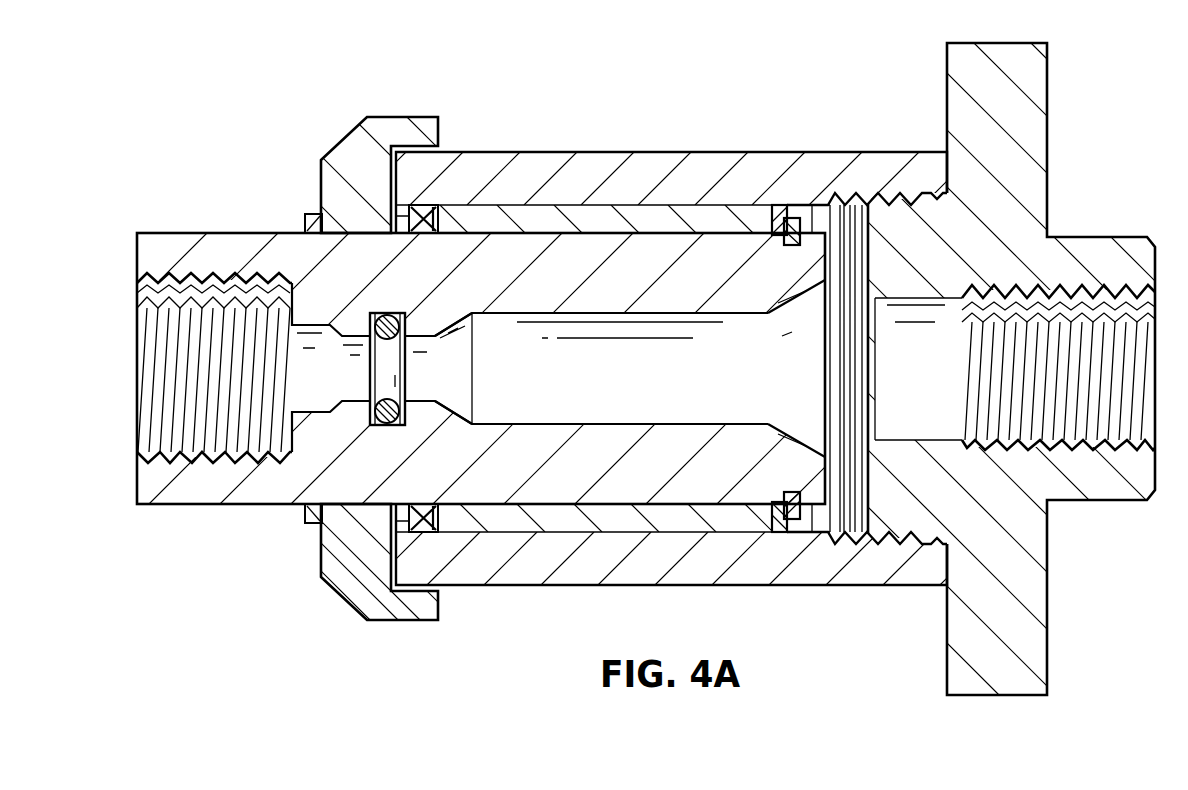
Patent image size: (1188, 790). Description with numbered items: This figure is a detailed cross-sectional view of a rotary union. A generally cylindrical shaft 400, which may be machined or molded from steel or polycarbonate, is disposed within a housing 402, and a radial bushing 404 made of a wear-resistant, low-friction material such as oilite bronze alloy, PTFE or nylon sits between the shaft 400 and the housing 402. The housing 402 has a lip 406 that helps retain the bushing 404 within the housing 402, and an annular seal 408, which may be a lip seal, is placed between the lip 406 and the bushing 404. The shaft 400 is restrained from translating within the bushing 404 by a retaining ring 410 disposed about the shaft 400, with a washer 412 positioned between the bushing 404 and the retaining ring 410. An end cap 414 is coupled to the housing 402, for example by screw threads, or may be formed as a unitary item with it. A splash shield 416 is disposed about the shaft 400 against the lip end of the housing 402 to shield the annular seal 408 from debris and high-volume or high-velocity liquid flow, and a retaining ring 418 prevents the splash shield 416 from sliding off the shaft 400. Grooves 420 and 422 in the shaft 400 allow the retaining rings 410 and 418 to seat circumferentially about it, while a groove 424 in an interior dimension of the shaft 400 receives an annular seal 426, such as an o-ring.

The shaft 400 is at (193, 507).
The housing 402 is at (572, 588).
The radial bushing 404 is at (600, 217).
The lip 406 is at (397, 532).
The annular seal 408 is at (428, 528).
The retaining ring 410 is at (797, 525).
The washer 412 is at (775, 225).
The end cap 414 is at (1048, 132).
The splash shield 416 is at (316, 562).
The retaining ring 418 is at (304, 514).
The groove 420 is at (775, 453).
The groove 422 is at (316, 240).
The groove 424 is at (378, 316).
The annular seal 426 is at (458, 352).